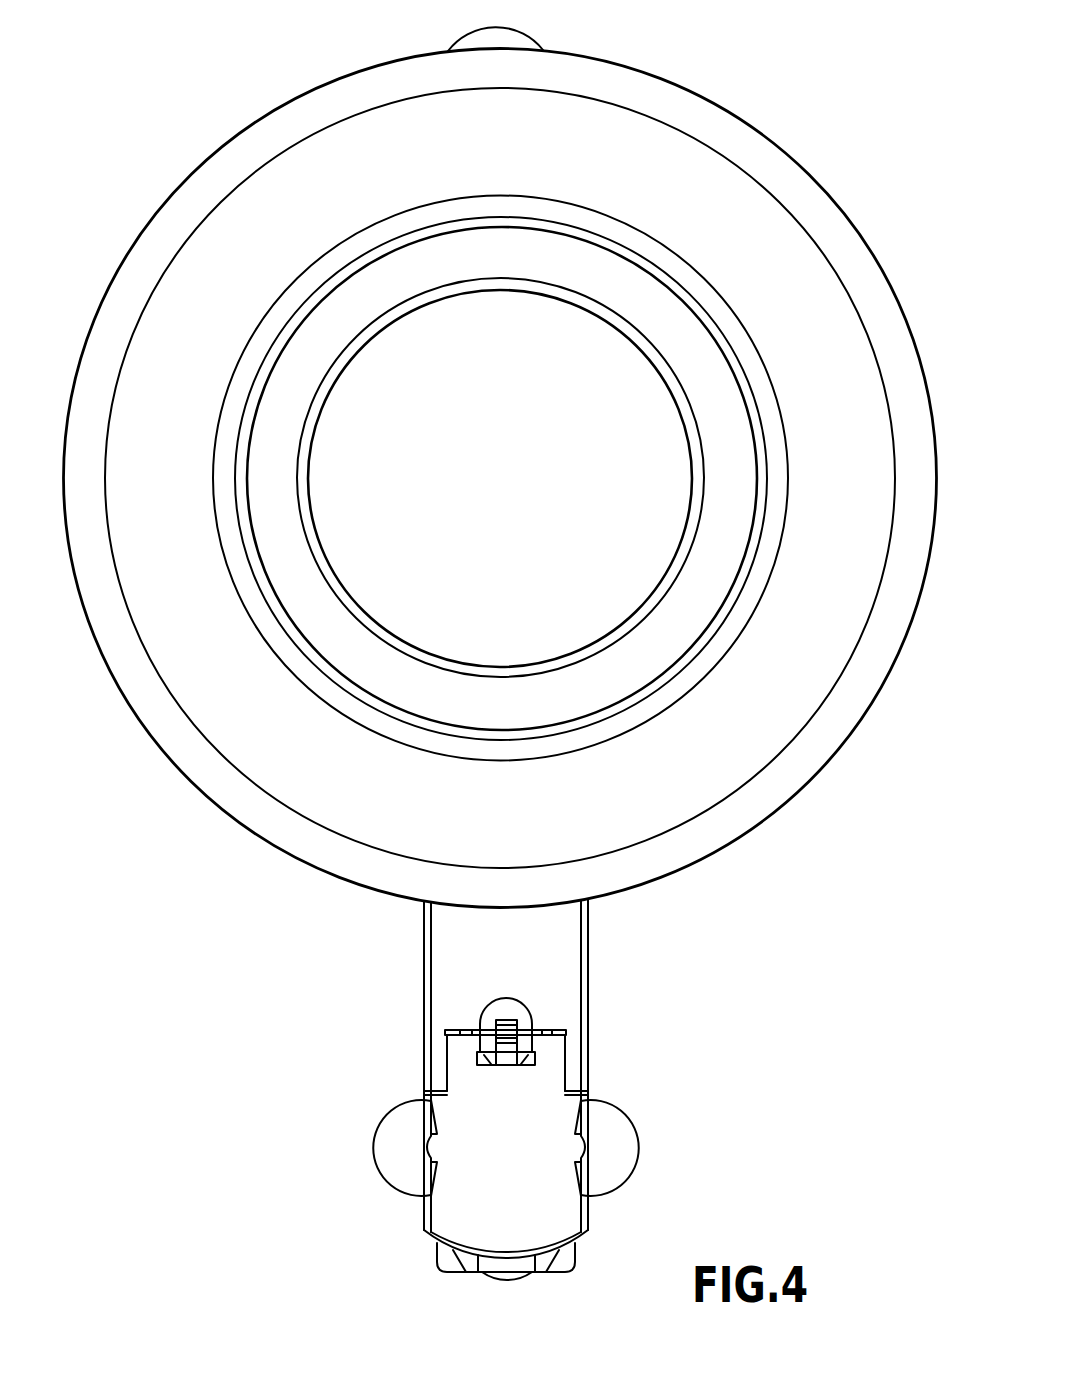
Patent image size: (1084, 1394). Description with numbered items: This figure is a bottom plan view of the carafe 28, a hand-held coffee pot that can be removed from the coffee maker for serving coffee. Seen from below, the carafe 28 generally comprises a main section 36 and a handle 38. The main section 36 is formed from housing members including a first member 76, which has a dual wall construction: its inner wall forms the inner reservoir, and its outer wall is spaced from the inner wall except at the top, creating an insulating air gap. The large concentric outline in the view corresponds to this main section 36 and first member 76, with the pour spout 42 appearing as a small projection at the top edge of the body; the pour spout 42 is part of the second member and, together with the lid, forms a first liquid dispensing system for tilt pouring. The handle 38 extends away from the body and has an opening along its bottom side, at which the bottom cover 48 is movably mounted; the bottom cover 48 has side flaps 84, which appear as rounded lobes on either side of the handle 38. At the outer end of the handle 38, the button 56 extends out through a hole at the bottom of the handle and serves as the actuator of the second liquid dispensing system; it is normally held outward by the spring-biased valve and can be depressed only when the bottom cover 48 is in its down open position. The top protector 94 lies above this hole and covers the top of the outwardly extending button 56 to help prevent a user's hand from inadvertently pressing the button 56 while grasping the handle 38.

The carafe 28 is at (782, 85).
The main section 36 is at (825, 770).
The handle 38 is at (588, 992).
The pour spout 42 is at (527, 36).
The bottom cover 48 is at (553, 1205).
The button 56 is at (506, 1280).
The first member 76 is at (722, 852).
The side flaps 84 is at (377, 1140).
The top protector 94 is at (436, 1253).